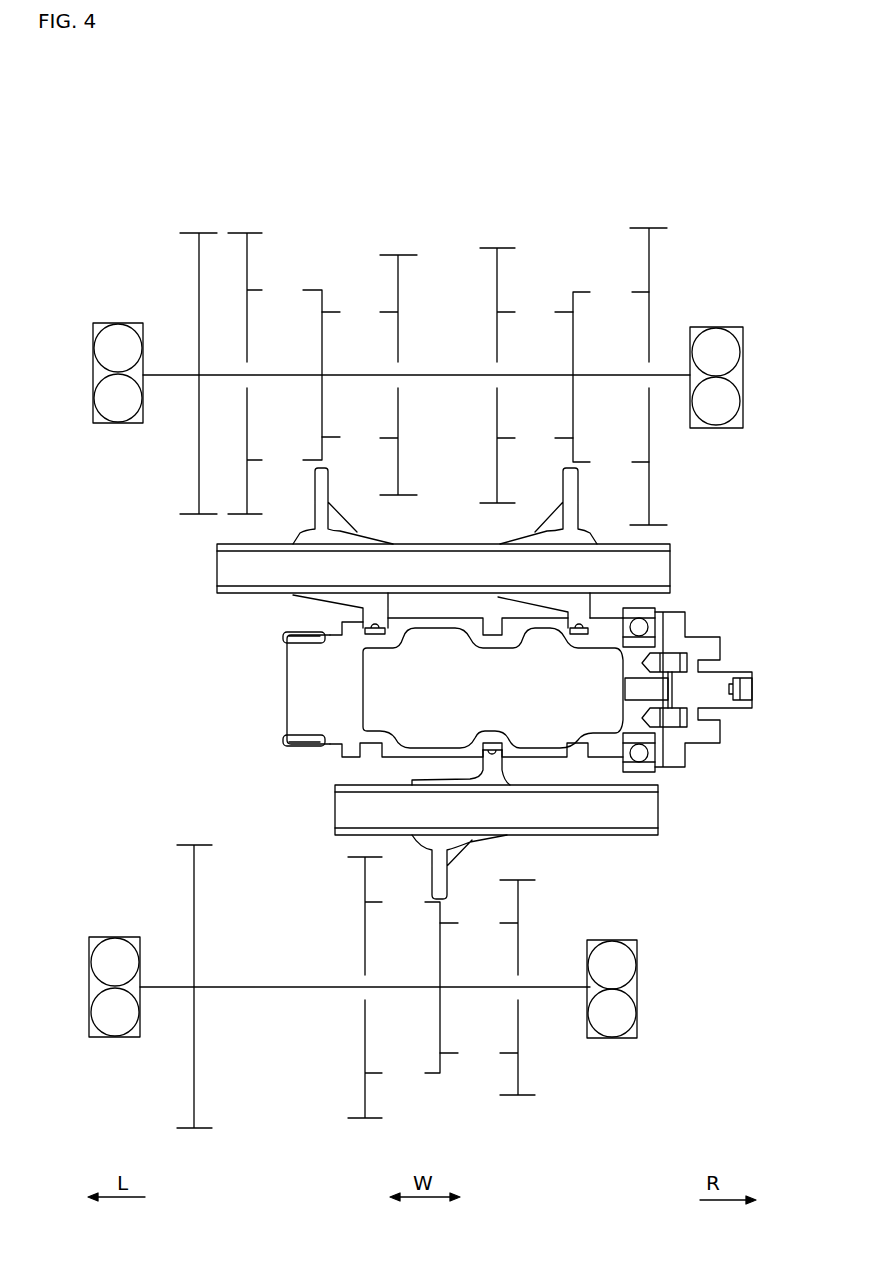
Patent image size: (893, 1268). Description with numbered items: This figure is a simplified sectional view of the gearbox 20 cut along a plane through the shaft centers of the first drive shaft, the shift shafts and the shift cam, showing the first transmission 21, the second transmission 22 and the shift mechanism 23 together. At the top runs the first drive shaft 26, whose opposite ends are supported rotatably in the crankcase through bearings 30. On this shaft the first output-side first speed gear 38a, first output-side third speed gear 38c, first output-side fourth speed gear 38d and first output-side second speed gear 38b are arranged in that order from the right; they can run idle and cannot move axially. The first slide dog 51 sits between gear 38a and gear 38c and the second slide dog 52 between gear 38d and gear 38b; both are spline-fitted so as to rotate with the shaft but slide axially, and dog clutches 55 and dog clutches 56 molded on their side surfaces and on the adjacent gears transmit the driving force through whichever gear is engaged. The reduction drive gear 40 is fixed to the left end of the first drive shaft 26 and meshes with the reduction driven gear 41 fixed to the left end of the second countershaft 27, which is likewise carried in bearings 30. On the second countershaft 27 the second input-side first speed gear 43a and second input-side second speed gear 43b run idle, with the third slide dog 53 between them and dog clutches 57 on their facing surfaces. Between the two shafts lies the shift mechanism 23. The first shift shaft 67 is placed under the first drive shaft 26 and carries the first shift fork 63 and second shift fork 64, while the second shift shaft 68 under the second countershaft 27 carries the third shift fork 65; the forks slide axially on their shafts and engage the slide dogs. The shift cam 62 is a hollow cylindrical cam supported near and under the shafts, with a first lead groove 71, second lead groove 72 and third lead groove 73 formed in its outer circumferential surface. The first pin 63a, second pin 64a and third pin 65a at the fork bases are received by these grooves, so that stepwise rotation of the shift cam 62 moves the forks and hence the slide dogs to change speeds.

The transmission 20 is at (118, 184).
The first transmission 21 is at (117, 298).
The second transmission 22 is at (598, 892).
The shift mechanism 23 is at (726, 613).
The first drive shaft 26 is at (170, 378).
The second countershaft 27 is at (172, 985).
The bearing 30 is at (118, 425).
The first output-side first speed gear 38a is at (649, 253).
The first output-side second speed gear 38b is at (247, 250).
The first output-side third speed gear 38c is at (497, 275).
The first output-side fourth speed gear 38d is at (398, 277).
The reduction drive gear 40 is at (199, 268).
The reduction driven gear 41 is at (194, 880).
The second input-side first speed gear 43a is at (518, 893).
The second input-side second speed gear 43b is at (358, 882).
The first slide dog 51 is at (573, 352).
The second slide dog 52 is at (322, 350).
The third slide dog 53 is at (442, 962).
The dog clutch 55 is at (510, 312).
The dog clutch 56 is at (378, 310).
The dog clutch 57 is at (503, 1053).
The shift cam 62 is at (448, 713).
The first shift fork 63 is at (567, 571).
The second shift fork 64 is at (379, 561).
The third shift fork 65 is at (420, 857).
The first pin 63a is at (572, 632).
The second pin 64a is at (386, 632).
The third pin 65a is at (483, 740).
The first shift shaft 67 is at (676, 565).
The second shift shaft 68 is at (667, 810).
The first lead groove 71 is at (578, 635).
The second lead groove 72 is at (375, 635).
The third lead groove 73 is at (500, 748).